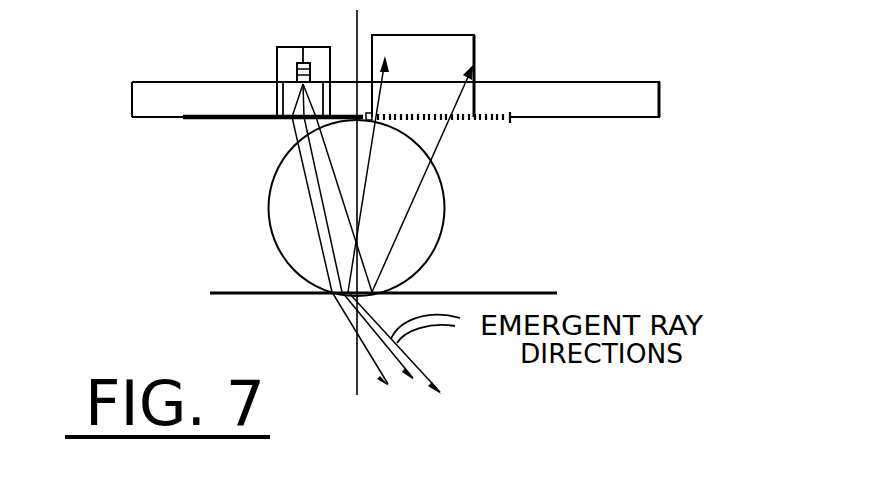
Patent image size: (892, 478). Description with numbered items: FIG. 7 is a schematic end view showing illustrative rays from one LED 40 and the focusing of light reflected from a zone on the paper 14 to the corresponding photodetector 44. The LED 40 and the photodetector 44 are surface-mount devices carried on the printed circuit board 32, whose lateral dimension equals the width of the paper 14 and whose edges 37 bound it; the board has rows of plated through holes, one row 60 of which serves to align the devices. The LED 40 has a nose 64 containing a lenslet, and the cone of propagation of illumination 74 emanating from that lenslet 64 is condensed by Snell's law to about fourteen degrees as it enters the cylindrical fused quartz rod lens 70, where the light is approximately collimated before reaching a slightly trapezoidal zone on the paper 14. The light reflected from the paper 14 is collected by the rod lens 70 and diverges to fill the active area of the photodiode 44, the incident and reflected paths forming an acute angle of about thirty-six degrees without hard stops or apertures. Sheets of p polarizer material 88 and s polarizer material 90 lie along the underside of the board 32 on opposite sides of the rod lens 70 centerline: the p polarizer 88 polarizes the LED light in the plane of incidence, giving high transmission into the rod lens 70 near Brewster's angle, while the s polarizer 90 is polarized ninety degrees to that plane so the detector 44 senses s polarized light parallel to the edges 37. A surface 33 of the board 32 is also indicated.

The paper 14 is at (280, 295).
The printed circuit board 32 is at (643, 83).
The bar lower surface 33 is at (572, 118).
The edges 37 is at (132, 102).
The LED 40 is at (290, 48).
The photodetector 44 is at (475, 35).
The row of through holes 60 is at (477, 97).
The nose 64 is at (290, 98).
The rod lens 70 is at (440, 238).
The cone of propagation of illumination 74 is at (300, 128).
The p polarizer material 88 is at (197, 120).
The s polarizer material 90 is at (470, 121).